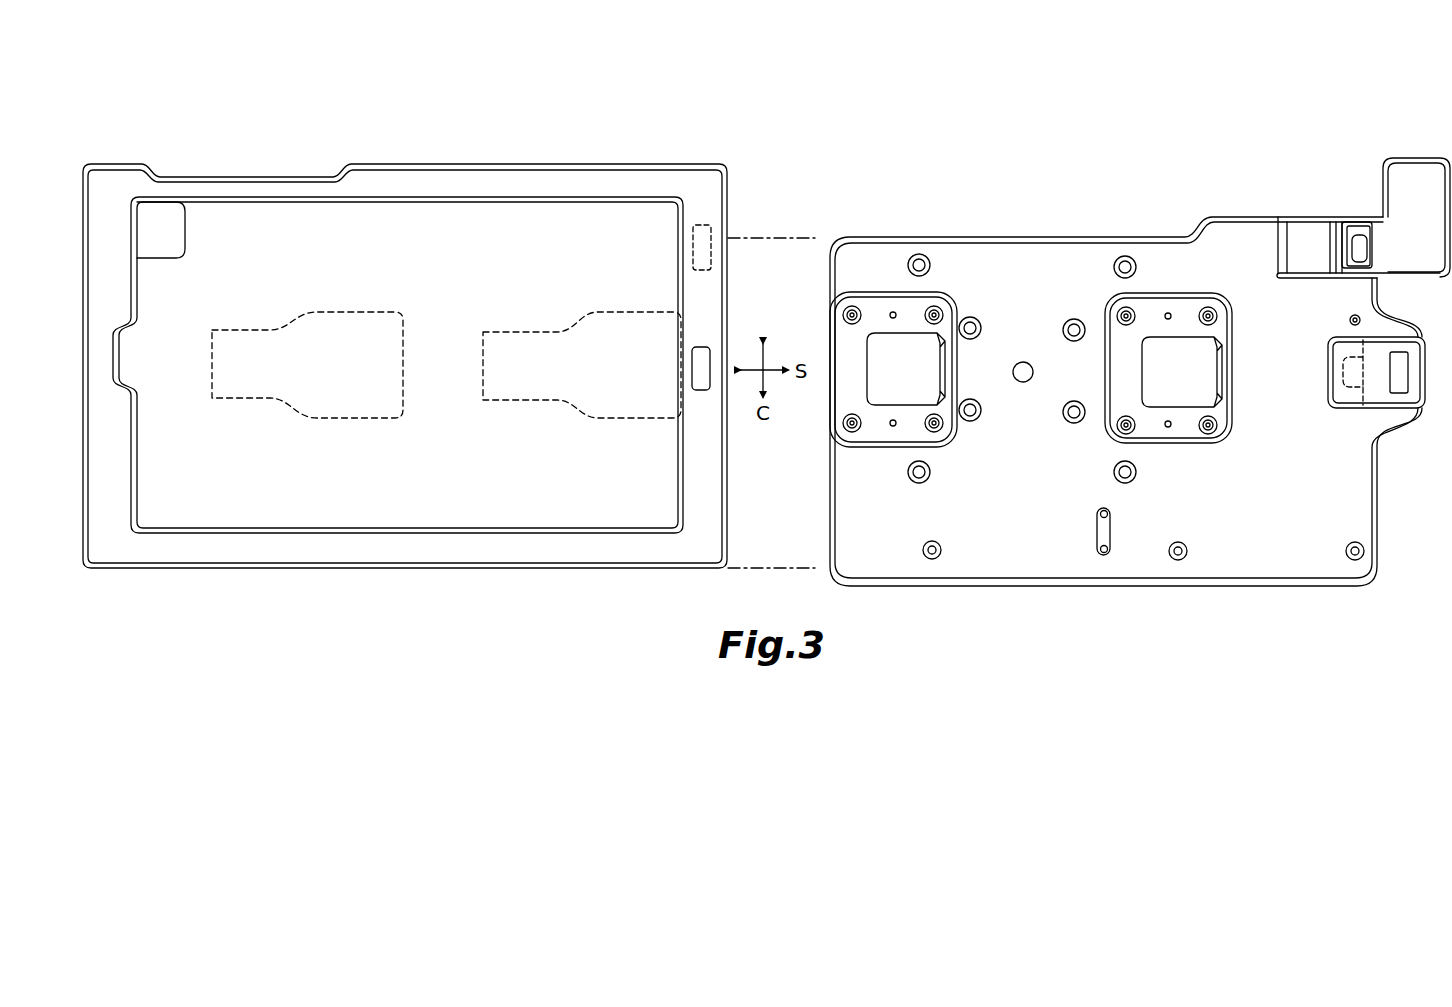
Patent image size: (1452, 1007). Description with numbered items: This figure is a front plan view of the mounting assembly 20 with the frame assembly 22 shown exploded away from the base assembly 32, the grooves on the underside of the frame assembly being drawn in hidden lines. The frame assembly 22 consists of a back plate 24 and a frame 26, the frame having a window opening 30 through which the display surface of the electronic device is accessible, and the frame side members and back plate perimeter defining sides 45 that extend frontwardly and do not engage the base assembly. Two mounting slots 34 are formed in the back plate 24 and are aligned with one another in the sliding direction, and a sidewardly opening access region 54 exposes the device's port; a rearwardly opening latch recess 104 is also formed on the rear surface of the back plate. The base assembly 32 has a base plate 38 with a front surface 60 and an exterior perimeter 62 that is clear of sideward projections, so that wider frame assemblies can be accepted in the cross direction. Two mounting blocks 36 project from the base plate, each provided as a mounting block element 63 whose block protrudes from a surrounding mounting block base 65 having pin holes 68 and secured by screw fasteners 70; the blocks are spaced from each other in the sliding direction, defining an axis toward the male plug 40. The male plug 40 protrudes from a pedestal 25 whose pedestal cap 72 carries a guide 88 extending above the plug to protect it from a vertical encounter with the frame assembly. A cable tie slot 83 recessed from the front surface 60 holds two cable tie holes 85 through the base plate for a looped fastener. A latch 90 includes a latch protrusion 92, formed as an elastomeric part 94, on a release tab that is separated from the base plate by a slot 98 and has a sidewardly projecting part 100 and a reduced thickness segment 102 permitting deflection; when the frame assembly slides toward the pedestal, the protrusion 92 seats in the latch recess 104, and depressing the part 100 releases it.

The mounting assembly 20 is at (938, 160).
The frame assembly 22 is at (378, 164).
The back plate 24 is at (348, 240).
The pedestal 25 is at (1348, 410).
The frame 26 is at (440, 202).
The window opening 30 is at (262, 528).
The base assembly 32 is at (1128, 237).
The mounting slots 34 is at (250, 330).
The mounting blocks 36 is at (907, 333).
The base plate 38 is at (975, 237).
The male plug 40 is at (1332, 398).
The sides 45 is at (500, 164).
The access region 54 is at (727, 372).
The front surface 60 is at (1022, 368).
The exterior perimeter 62 is at (990, 586).
The mounting block element 63 is at (945, 440).
The mounting block base 65 is at (1105, 370).
The pin holes 68 is at (1168, 313).
The screw fasteners 70 is at (1120, 313).
The pedestal cap 72 is at (1384, 372).
The cable tie slot 83 is at (1100, 545).
The cable tie holes 85 is at (1100, 525).
The guide 88 is at (1335, 340).
The latch 90 is at (1355, 210).
The latch protrusion 92 is at (1347, 250).
The elastomeric part 94 is at (1370, 248).
The slot 98 is at (1340, 283).
The sidewardly projecting part 100 is at (1415, 158).
The reduced thickness segment 102 is at (1290, 220).
The latch recess 104 is at (712, 249).